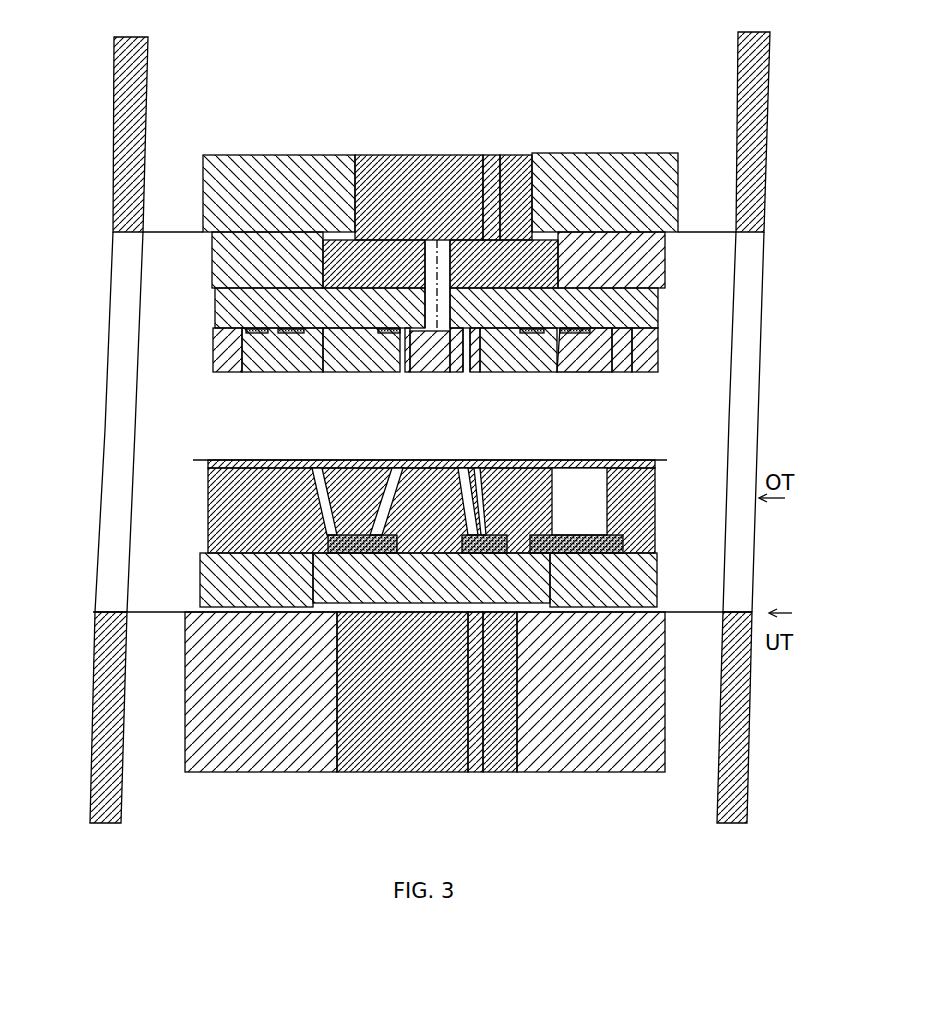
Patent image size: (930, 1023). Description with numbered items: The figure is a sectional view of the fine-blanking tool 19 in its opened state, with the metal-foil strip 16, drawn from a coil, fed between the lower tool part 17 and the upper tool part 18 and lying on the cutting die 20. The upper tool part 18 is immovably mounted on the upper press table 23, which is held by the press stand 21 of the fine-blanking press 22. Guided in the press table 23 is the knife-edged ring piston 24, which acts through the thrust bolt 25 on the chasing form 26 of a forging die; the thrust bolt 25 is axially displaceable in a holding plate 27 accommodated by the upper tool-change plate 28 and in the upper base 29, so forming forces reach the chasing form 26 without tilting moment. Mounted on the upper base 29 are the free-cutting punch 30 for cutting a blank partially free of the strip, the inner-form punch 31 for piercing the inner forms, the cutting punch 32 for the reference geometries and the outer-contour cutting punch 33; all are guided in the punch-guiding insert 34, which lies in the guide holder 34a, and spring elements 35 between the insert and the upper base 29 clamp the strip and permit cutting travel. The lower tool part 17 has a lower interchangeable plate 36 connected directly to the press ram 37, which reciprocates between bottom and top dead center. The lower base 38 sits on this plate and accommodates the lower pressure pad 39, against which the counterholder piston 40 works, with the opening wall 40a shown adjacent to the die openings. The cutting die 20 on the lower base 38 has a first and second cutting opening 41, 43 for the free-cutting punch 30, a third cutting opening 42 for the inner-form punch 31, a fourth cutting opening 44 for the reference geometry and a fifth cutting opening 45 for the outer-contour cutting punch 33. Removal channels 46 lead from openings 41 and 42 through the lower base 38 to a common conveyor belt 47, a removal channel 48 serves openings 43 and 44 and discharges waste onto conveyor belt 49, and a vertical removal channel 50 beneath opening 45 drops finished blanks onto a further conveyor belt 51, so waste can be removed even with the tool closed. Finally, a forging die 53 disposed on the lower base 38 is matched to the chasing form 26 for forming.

The metal-foil strip 16 is at (451, 443).
The lower tool part 17 is at (377, 624).
The upper tool part 18 is at (425, 222).
The tool 19 is at (95, 426).
The cutting die 20 is at (210, 462).
The press stand 21 is at (113, 224).
The fine-blanking press 22 is at (277, 85).
The upper press table 23 is at (210, 202).
The knife-edged ring piston 24 is at (379, 160).
The thrust bolt 25 is at (447, 258).
The chasing form 26 is at (430, 363).
The holding plate 27 is at (275, 180).
The upper tool-change plate 28 is at (215, 273).
The upper base 29 is at (215, 302).
The free-cutting punch 30 is at (500, 384).
The inner-form punch 31 is at (400, 373).
The cutting punch 32 is at (472, 367).
The outer-contour cutting punch 33 is at (583, 355).
The punch-guiding insert 34 is at (215, 357).
The guide holder 34a is at (215, 345).
The spring elements 35 is at (550, 330).
The lower interchangeable plate 36 is at (213, 580).
The press ram 37 is at (210, 670).
The lower base 38 is at (401, 510).
The lower pressure pad 39 is at (323, 575).
The counterholder piston 40 is at (360, 742).
The die opening wall 40a is at (417, 510).
The first cutting opening 41 is at (312, 462).
The third cutting opening 42 is at (383, 480).
The second cutting opening 43 is at (484, 460).
The fourth cutting opening 44 is at (447, 444).
The fifth cutting opening 45 is at (546, 443).
The removal channels 46 is at (327, 500).
The conveyor belt 47 is at (374, 565).
The removal channel 48 is at (482, 493).
The conveyor belt 49 is at (487, 553).
The removal channel 50 is at (596, 518).
The conveyor belt 51 is at (593, 553).
The forging die 53 is at (418, 462).